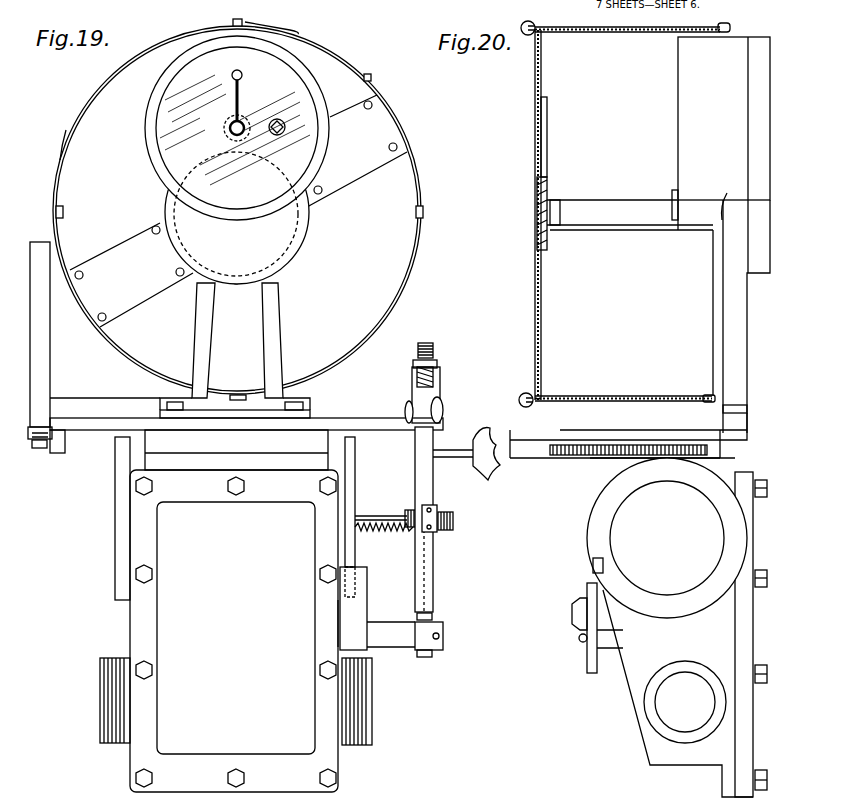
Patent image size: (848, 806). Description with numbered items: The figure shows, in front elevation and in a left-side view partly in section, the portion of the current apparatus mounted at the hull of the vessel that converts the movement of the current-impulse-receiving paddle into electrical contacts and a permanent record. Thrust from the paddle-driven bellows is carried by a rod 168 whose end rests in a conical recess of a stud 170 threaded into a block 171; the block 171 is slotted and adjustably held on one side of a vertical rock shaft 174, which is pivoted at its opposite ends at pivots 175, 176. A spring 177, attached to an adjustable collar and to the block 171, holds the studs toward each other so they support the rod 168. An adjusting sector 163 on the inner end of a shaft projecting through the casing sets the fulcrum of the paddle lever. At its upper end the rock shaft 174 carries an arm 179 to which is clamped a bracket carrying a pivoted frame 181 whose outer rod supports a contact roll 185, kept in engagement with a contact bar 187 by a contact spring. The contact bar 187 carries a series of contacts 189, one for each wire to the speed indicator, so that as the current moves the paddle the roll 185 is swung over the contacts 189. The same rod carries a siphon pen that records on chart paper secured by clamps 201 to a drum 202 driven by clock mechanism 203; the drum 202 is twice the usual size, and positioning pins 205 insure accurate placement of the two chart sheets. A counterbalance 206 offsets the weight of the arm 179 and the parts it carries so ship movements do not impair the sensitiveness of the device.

In FIG. 20, the adjusting sector 163 is at (590, 663).
In FIG. 19, the rod 168 is at (375, 516).
In FIG. 19, the stud 170 is at (453, 521).
In FIG. 19, the block 171 is at (440, 532).
In FIG. 19, the vertical rock shaft 174 is at (434, 590).
In FIG. 19, the pivot 175 is at (432, 617).
In FIG. 19, the pivot 176 is at (437, 352).
In FIG. 19, the spring 177 is at (398, 530).
In FIG. 19, the arm 179 is at (246, 414).
In FIG. 19, the frame 181 is at (50, 378).
In FIG. 19, the contact roll 185 is at (40, 447).
In FIG. 19, the contact bar 187 is at (65, 443).
In FIG. 20, the contact bar 187 is at (720, 452).
In FIG. 19, the contacts 189 is at (47, 447).
In FIG. 20, the contacts 189 is at (597, 445).
In FIG. 19, the clamps 201 is at (290, 33).
In FIG. 20, the clamps 201 is at (521, 25).
In FIG. 19, the drum 202 is at (72, 137).
In FIG. 20, the drum 202 is at (639, 32).
In FIG. 19, the clock mechanism 203 is at (305, 102).
In FIG. 20, the clock mechanism 203 is at (721, 235).
In FIG. 19, the positioning pins 205 is at (372, 346).
In FIG. 19, the counterbalance 206 is at (478, 432).